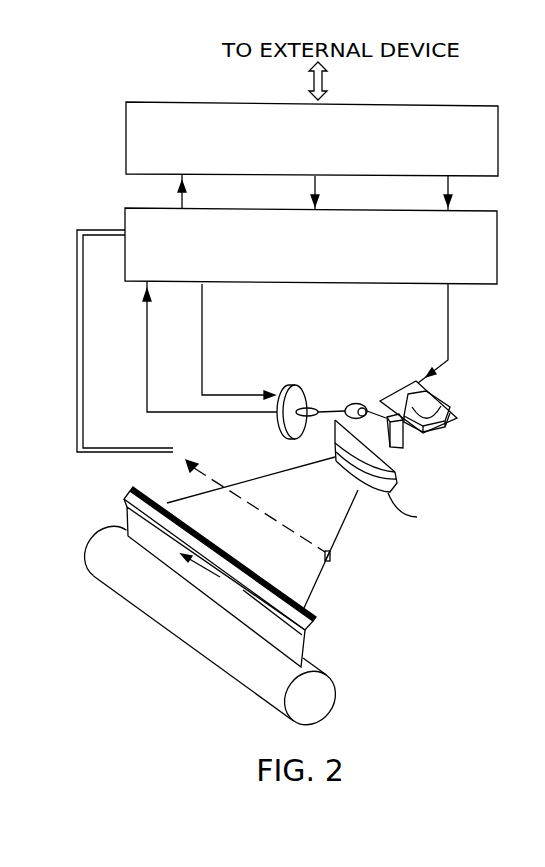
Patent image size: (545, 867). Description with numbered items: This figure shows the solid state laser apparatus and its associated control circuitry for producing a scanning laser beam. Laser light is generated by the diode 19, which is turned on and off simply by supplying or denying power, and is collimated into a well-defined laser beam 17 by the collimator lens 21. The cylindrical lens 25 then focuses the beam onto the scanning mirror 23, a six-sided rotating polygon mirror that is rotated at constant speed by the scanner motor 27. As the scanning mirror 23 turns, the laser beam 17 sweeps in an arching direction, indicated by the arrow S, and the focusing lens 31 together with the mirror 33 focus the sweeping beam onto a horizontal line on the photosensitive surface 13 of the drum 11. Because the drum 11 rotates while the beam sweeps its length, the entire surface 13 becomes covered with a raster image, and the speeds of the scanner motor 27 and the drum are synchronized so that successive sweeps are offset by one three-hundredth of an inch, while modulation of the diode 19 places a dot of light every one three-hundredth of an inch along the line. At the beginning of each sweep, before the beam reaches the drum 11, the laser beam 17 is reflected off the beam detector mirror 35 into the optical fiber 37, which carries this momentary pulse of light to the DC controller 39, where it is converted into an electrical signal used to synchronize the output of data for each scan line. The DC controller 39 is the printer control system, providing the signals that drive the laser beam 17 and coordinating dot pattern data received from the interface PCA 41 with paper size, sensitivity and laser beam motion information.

The drum 11 is at (335, 700).
The photosensitive surface 13 is at (202, 637).
The laser beam 17 is at (335, 517).
The diode 19 is at (279, 428).
The collimator lens 21 is at (308, 398).
The scanning mirror 23 is at (450, 398).
The cylindrical lens 25 is at (359, 397).
The scanner motor 27 is at (445, 432).
The focusing lens 31 is at (403, 443).
The mirror 33 is at (312, 630).
The beam detector mirror 35 is at (329, 561).
The optical fiber 37 is at (83, 367).
The DC controller 39 is at (497, 250).
The interface PCA 41 is at (498, 128).